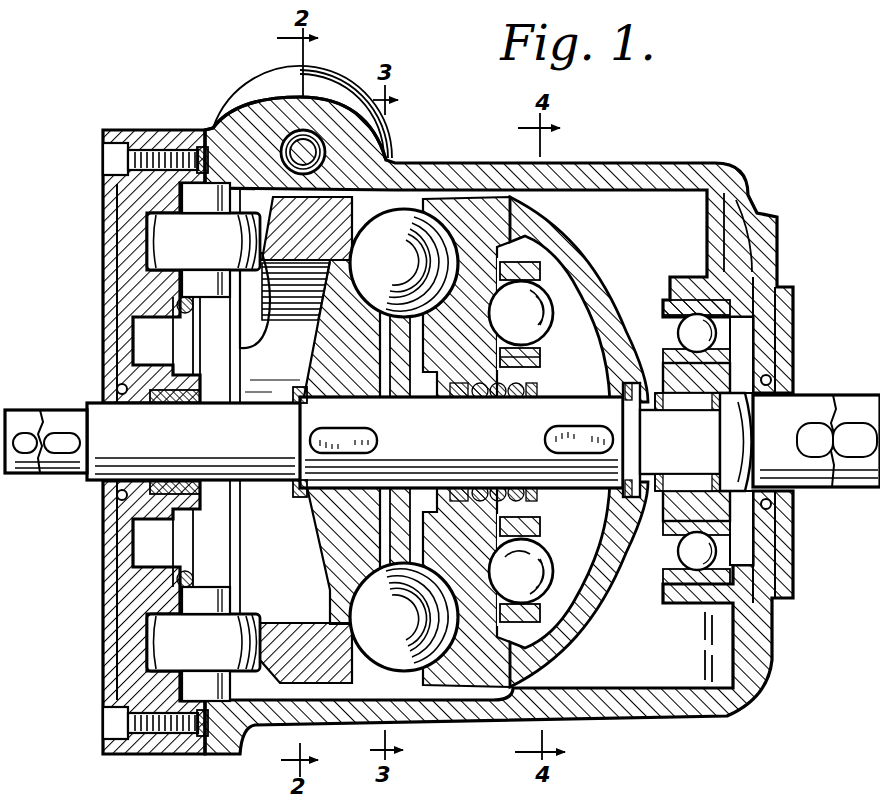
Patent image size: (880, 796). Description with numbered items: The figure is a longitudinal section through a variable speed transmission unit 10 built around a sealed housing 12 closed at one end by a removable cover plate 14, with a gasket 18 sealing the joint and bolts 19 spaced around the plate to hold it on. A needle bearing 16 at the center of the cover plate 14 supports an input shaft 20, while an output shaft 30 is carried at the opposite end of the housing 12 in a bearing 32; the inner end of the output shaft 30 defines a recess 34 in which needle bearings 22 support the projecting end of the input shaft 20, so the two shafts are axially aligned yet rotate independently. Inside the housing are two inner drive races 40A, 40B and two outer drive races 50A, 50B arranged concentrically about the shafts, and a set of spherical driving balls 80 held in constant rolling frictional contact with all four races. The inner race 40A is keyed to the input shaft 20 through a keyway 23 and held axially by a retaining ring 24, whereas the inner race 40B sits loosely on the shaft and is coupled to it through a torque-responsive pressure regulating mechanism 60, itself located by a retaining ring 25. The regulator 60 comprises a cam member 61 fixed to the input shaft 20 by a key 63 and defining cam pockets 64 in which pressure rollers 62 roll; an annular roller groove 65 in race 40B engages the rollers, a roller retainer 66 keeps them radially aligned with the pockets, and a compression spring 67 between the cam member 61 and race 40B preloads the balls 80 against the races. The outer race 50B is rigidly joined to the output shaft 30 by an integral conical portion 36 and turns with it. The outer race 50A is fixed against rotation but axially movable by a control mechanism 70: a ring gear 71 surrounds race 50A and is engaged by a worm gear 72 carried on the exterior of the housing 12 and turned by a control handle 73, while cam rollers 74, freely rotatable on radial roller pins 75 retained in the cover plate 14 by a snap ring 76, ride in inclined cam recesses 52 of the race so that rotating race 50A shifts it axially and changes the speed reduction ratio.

The variable speed transmission unit 10 is at (499, 425).
The sealed housing 12 is at (581, 165).
The cover plate 14 is at (115, 235).
The needle bearing 16 is at (152, 375).
The gasket 18 is at (110, 174).
The bolts 19 is at (136, 158).
The input shaft 20 is at (58, 410).
The needle bearings 22 is at (672, 400).
The keyway 23 is at (346, 434).
The retaining ring 24 is at (296, 398).
The retaining ring 25 is at (623, 396).
The output shaft 30 is at (812, 398).
The bearing 32 is at (706, 318).
The recess 34 is at (778, 532).
The conical portion 36 is at (582, 240).
The inner drive race 40A is at (362, 320).
The inner drive race 40B is at (512, 234).
The outer drive race 50A is at (318, 238).
The outer drive race 50B is at (437, 198).
The cam recesses 52 is at (250, 330).
The pressure regulating mechanism 60 is at (590, 534).
The cam member 61 is at (548, 567).
The pressure rollers 62 is at (541, 279).
The key 63 is at (560, 431).
The cam pockets 64 is at (556, 300).
The roller groove 65 is at (507, 614).
The roller retainer 66 is at (498, 361).
The compression spring 67 is at (488, 403).
The control mechanism 70 is at (203, 128).
The ring gear 71 is at (377, 186).
The worm gear 72 is at (290, 137).
The control handle 73 is at (322, 71).
The cam rollers 74 is at (167, 227).
The roller pins 75 is at (187, 276).
The snap ring 76 is at (134, 323).
The driving balls 80 is at (368, 275).